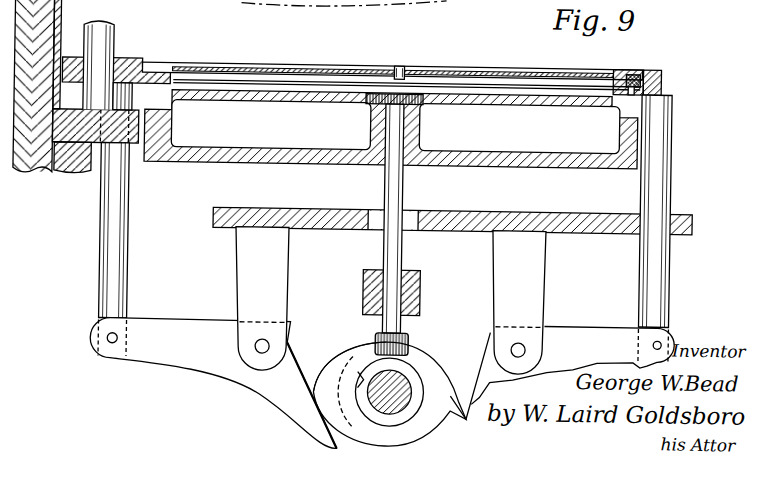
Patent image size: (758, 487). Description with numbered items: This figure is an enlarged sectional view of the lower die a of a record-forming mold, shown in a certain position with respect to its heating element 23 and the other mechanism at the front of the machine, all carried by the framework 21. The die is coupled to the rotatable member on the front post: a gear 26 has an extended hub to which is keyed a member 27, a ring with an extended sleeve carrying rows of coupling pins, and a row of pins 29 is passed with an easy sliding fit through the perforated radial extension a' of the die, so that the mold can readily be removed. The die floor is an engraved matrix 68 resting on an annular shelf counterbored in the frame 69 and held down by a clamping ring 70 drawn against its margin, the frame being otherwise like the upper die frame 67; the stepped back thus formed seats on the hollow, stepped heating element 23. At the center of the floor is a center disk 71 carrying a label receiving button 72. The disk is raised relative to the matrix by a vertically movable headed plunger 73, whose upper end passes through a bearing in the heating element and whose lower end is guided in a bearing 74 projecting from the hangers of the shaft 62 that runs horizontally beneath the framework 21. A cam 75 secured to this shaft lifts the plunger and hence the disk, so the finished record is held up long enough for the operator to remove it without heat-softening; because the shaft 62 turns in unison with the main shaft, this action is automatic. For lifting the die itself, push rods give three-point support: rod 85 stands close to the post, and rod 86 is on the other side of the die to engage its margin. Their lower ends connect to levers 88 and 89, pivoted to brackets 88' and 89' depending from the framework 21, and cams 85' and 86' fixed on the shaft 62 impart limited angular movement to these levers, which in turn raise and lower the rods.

The gear 26 is at (35, 173).
The member 27 is at (75, 149).
The perforated radial extension a' is at (116, 42).
The row of pins 29 is at (113, 44).
The lower die a is at (195, 45).
The matrix 68 is at (512, 69).
The center disk 71 is at (430, 67).
The label receiving button 72 is at (394, 63).
The clamping ring 70 is at (624, 71).
The frame 69 is at (661, 73).
The push rod 86 is at (680, 211).
The frame 67 is at (153, 163).
The heating element 23 is at (477, 101).
The framework 21 is at (580, 218).
The bearing 74 is at (424, 290).
The headed plunger 73 is at (385, 181).
The push rod 85 is at (90, 230).
The lever 88 is at (214, 382).
The bracket 88' is at (261, 299).
The lever 89 is at (572, 366).
The bracket 89' is at (518, 303).
The cam 75 is at (367, 365).
The cam 85' is at (340, 363).
The cam 86' is at (466, 376).
The shaft 62 is at (390, 407).